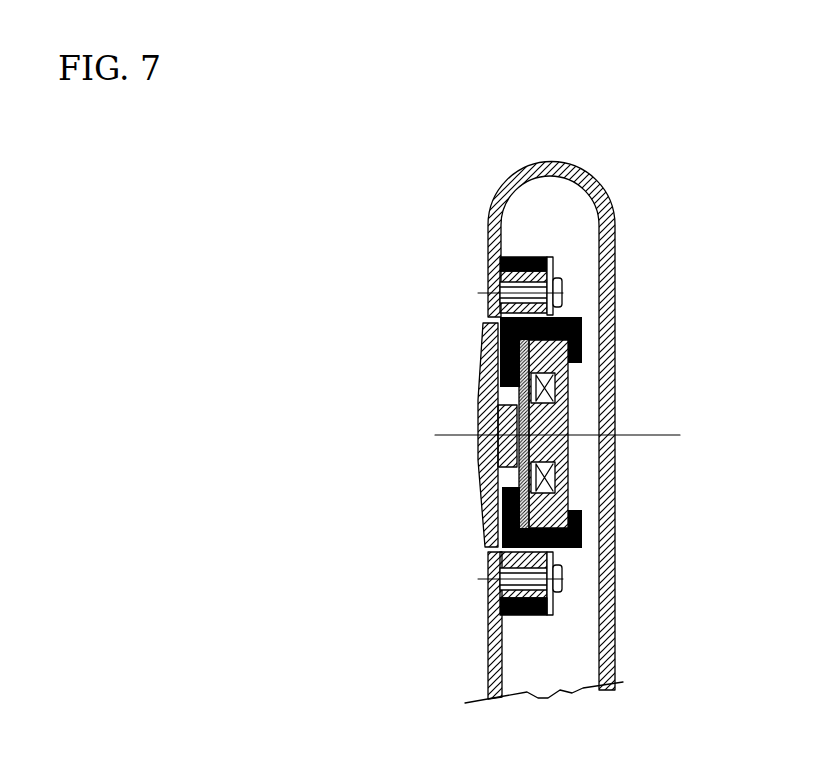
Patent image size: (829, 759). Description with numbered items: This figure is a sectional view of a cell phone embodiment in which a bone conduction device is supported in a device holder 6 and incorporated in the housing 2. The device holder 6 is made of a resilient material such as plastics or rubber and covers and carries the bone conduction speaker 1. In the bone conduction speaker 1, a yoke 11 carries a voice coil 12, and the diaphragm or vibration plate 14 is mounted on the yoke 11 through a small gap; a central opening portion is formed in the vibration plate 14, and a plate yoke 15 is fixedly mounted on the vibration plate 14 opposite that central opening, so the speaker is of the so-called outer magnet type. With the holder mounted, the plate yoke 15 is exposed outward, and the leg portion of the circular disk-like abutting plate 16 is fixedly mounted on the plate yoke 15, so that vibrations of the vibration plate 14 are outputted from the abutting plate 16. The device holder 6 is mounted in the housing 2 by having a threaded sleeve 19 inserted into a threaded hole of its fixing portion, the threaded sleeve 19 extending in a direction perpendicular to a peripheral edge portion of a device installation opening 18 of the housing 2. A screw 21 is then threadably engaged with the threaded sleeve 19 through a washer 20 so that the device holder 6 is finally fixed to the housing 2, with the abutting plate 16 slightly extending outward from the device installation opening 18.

The bone conduction speaker 1 is at (585, 488).
The housing 2 is at (606, 193).
The device holder 6 is at (587, 323).
The yoke 11 is at (557, 433).
The voice coil 12 is at (552, 393).
The vibration plate 14 is at (517, 469).
The plate yoke 15 is at (515, 421).
The abutting plate 16 is at (480, 383).
The device installation opening 18 is at (488, 553).
The threaded sleeve 19 is at (506, 268).
The washer 20 is at (553, 613).
The screw 21 is at (560, 578).